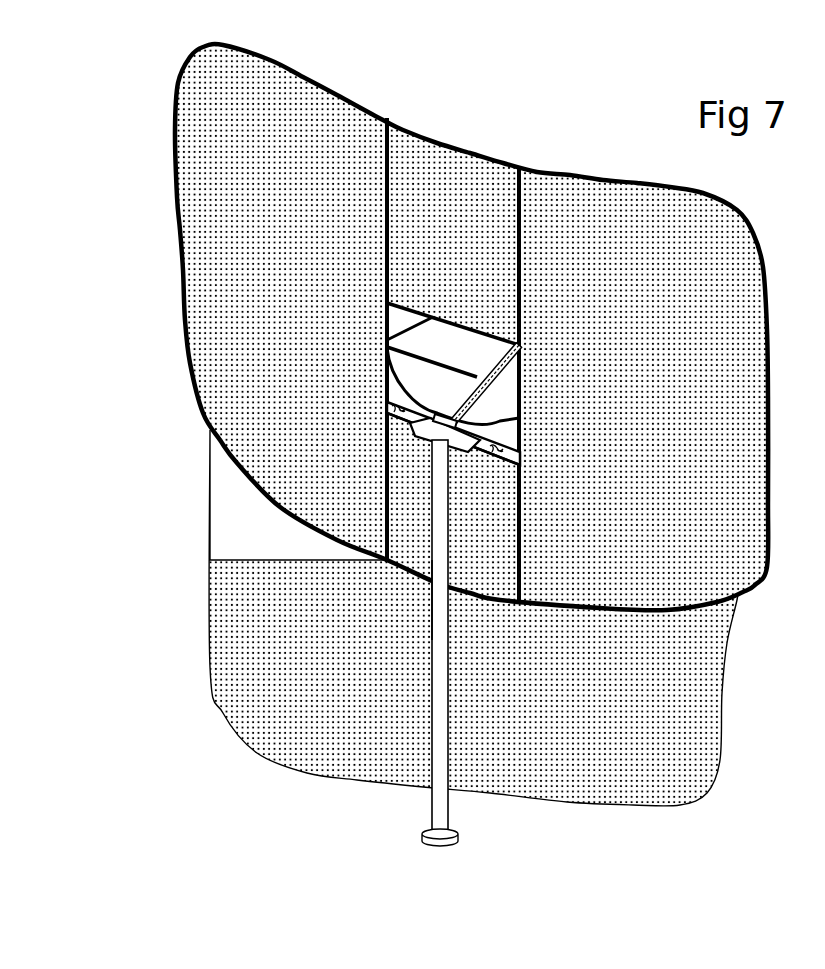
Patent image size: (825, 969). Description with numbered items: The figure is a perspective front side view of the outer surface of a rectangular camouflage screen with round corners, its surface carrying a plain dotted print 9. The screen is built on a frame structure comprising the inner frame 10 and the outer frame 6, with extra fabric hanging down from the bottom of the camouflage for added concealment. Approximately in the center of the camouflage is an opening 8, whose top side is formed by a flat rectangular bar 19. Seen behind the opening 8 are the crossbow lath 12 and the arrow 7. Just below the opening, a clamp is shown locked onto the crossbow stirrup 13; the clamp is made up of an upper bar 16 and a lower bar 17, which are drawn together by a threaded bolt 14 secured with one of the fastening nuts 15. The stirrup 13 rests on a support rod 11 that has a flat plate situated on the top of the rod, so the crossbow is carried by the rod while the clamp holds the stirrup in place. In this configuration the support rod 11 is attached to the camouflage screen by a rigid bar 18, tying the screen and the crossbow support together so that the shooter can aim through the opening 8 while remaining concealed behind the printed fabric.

The outer frame 6 is at (737, 600).
The arrow 7 is at (520, 373).
The opening 8 is at (430, 340).
The plain dotted print 9 is at (250, 367).
The inner frame 10 is at (520, 240).
The support rod 11 is at (432, 663).
The crossbow lath 12 is at (390, 408).
The stirrup 13 is at (454, 440).
The threaded bolt 14 is at (520, 455).
The fastening nut 15 is at (400, 410).
The upper bar 16 is at (520, 437).
The lower bar 17 is at (493, 440).
The rigid bar 18 is at (433, 595).
The flat rectangular bar 19 is at (445, 315).